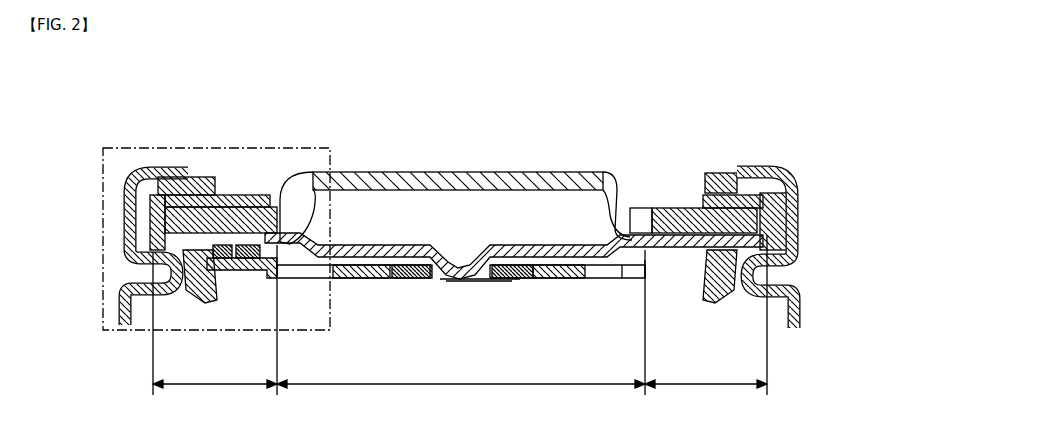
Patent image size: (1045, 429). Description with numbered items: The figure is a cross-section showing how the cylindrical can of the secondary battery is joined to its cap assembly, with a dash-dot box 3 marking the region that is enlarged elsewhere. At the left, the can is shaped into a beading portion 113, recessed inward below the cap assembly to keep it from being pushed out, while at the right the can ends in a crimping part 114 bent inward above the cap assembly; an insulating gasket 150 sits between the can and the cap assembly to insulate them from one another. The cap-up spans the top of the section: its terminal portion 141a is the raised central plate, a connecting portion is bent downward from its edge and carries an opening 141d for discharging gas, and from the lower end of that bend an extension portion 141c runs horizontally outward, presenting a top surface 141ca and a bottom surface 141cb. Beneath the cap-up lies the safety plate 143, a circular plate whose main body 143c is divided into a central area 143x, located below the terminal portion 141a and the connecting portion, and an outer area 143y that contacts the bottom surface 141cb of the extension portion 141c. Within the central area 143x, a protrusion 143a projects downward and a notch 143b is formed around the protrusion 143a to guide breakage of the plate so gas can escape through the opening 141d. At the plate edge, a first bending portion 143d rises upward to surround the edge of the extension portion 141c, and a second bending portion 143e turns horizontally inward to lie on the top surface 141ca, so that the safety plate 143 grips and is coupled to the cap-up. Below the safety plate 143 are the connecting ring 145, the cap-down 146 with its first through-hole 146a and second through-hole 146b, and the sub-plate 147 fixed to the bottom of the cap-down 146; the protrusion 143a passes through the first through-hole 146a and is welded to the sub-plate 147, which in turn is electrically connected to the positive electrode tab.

The region of detail (FIG. 3) 3 is at (103, 148).
The beading portion 113 is at (142, 272).
The crimping part 114 is at (748, 168).
The terminal portion 141a is at (435, 175).
The extension portion 141c is at (672, 203).
The top surface 141ca is at (690, 215).
The bottom surface 141cb is at (647, 240).
The opening 141d is at (618, 183).
The safety plate 143 is at (880, 186).
The protrusion 143a is at (477, 281).
The notch 143b is at (624, 270).
The main body 143c is at (762, 248).
The first bending portion 143d is at (768, 226).
The second bending portion 143e is at (752, 196).
The central area 143x is at (461, 395).
The outer area 143y is at (460, 322).
The connecting ring 145 is at (229, 248).
The cap-down 146 is at (247, 253).
The first through-hole 146a is at (446, 279).
The second through-hole 146b is at (318, 178).
The sub-plate 147 is at (415, 278).
The insulating gasket 150 is at (722, 175).